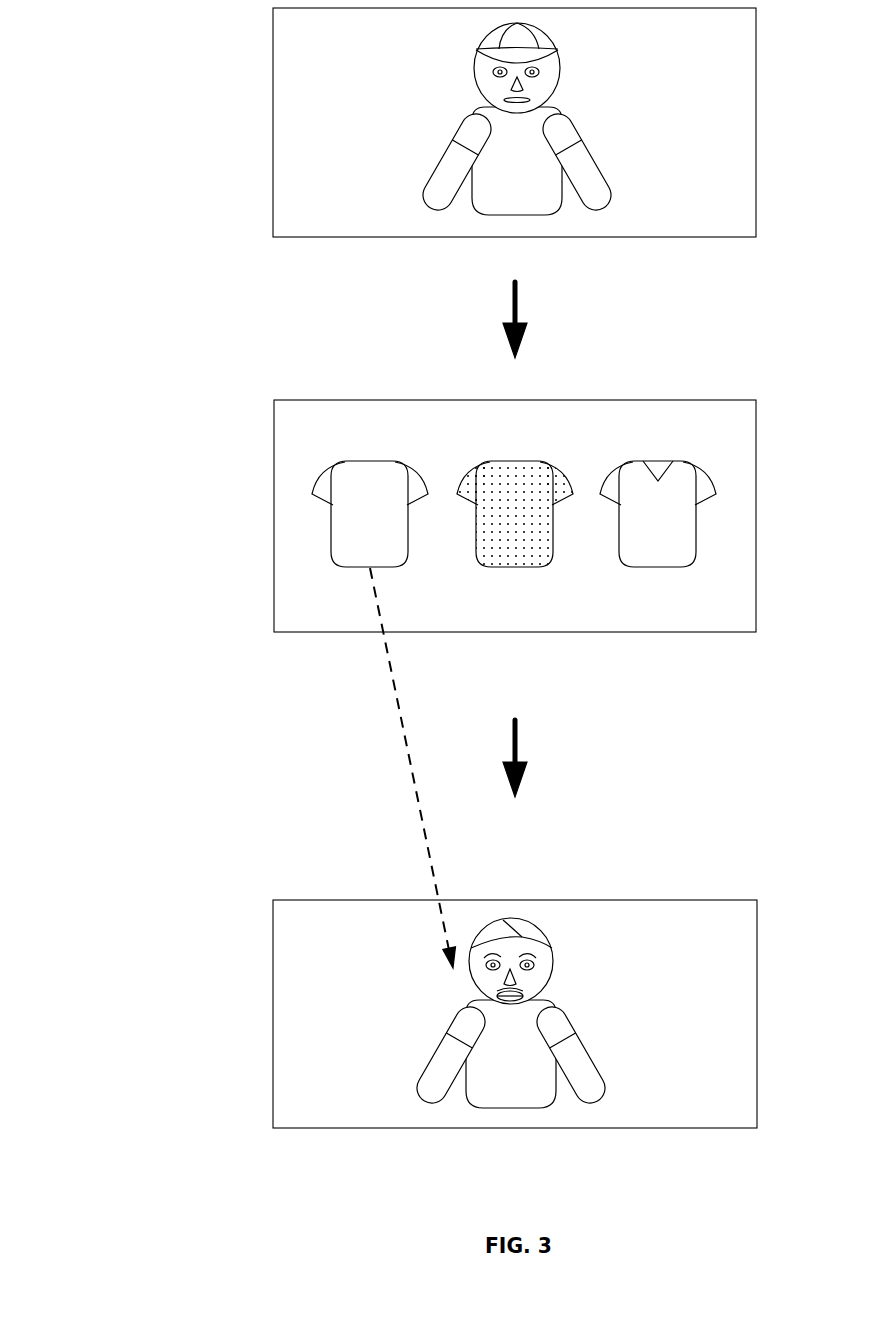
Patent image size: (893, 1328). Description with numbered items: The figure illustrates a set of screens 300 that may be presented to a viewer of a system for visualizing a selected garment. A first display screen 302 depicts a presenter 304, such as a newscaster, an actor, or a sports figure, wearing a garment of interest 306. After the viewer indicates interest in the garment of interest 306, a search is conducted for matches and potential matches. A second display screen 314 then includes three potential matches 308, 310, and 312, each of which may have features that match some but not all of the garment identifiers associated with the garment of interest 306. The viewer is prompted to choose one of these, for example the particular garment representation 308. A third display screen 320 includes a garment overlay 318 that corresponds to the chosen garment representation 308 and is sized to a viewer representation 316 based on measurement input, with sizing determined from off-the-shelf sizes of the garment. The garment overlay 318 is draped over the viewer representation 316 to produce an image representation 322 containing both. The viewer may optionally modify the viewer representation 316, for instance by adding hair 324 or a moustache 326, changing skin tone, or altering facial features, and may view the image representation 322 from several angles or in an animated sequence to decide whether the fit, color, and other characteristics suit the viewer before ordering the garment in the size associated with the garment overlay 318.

The set of screens 300 is at (194, 211).
The first display screen 302 is at (273, 65).
The presenter 304 is at (606, 53).
The garment of interest 306 is at (569, 126).
The second display screen 314 is at (274, 440).
The potential match 308 is at (371, 461).
The potential match 310 is at (516, 462).
The potential match 312 is at (658, 463).
The third display screen 320 is at (273, 927).
The image representation 322 is at (648, 934).
The hair 324 is at (545, 936).
The moustache 326 is at (497, 992).
The garment overlay 318 is at (562, 1019).
The viewer representation 316 is at (593, 1073).